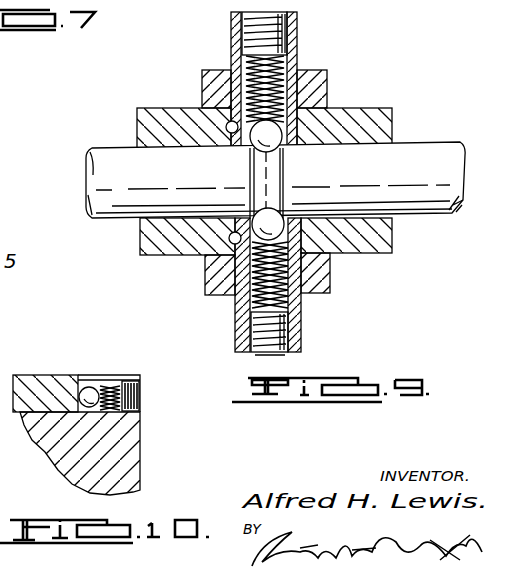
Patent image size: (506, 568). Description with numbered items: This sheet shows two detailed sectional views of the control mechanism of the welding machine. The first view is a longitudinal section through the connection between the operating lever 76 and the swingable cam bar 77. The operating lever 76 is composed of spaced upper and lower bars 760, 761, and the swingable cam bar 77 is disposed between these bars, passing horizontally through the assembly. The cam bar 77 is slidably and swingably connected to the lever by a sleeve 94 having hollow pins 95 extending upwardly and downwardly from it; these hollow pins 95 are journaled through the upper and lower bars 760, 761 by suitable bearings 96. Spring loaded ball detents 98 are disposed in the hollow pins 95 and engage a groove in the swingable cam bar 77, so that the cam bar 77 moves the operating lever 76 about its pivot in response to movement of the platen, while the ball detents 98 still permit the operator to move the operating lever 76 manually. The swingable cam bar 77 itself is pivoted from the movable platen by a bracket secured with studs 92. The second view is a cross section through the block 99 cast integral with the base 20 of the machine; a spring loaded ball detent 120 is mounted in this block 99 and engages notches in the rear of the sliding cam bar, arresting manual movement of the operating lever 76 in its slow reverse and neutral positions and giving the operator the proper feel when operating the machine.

In FIG. 10, the base 20 is at (140, 471).
In FIG. 10, the operating lever 76 is at (48, 350).
In FIG. 9, the swingable cam bar 77 is at (428, 144).
In FIG. 9, the studs 92 is at (250, 178).
In FIG. 9, the sleeve 94 is at (183, 108).
In FIG. 9, the hollow pins 95 is at (298, 32).
In FIG. 9, the bearings 96 is at (300, 97).
In FIG. 9, the spring loaded ball detents 98 is at (283, 148).
In FIG. 10, the block 99 is at (125, 437).
In FIG. 10, the spring loaded ball detent 120 is at (84, 388).
In FIG. 9, the upper bar 760 is at (327, 70).
In FIG. 9, the lower bar 761 is at (330, 281).